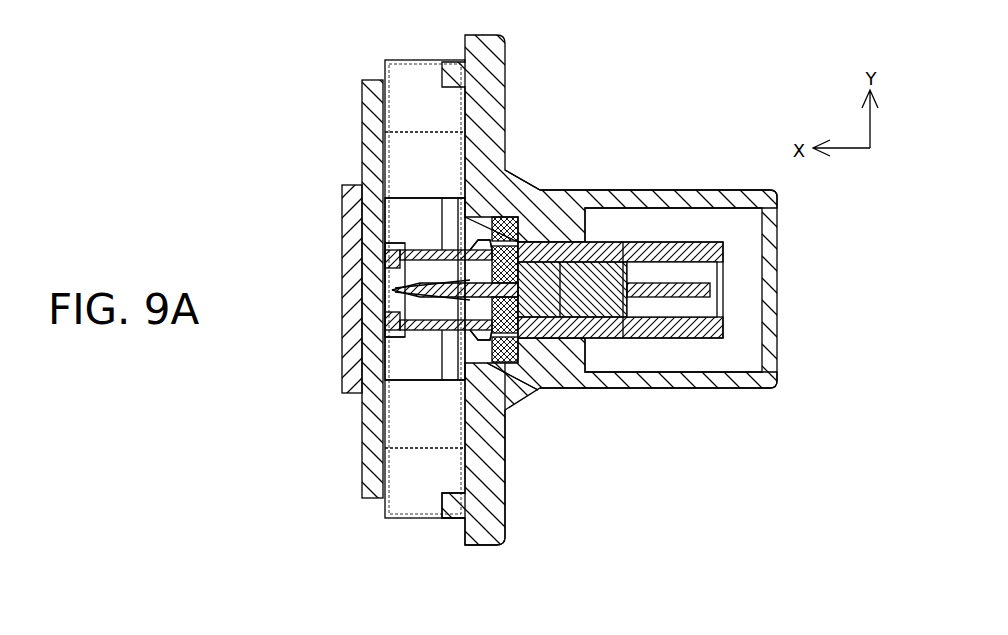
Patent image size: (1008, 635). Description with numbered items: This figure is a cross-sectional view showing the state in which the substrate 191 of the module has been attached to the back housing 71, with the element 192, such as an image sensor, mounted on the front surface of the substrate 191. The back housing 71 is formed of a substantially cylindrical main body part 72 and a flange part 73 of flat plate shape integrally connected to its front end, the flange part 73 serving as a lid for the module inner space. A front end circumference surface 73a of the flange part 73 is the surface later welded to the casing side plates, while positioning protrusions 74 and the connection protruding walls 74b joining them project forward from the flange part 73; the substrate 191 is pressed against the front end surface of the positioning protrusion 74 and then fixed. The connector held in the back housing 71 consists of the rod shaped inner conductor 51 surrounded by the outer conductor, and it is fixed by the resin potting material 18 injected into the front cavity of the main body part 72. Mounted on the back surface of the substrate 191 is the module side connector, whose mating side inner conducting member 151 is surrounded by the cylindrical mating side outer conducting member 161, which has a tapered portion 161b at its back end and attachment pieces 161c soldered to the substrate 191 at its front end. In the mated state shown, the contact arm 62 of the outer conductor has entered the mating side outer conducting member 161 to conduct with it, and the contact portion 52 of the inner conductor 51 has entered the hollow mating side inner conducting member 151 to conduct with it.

The potting material 18 is at (520, 352).
The inner conductor 51 is at (588, 343).
The contact portion 52 is at (515, 393).
The contact arm 62 is at (398, 420).
The back housing 71 is at (735, 390).
The main body part 72 is at (690, 190).
The flange part 73 is at (504, 42).
The front end circumference surface 73a is at (462, 530).
The positioning protrusion 74 is at (396, 61).
The connection protruding wall 74b is at (452, 513).
The mating side inner conducting member 151 is at (392, 290).
The mating side outer conducting member 161 is at (410, 342).
The tapered portion 161b is at (470, 218).
The attachment piece 161c is at (391, 235).
The substrate 191 is at (362, 423).
The element 192 is at (343, 190).